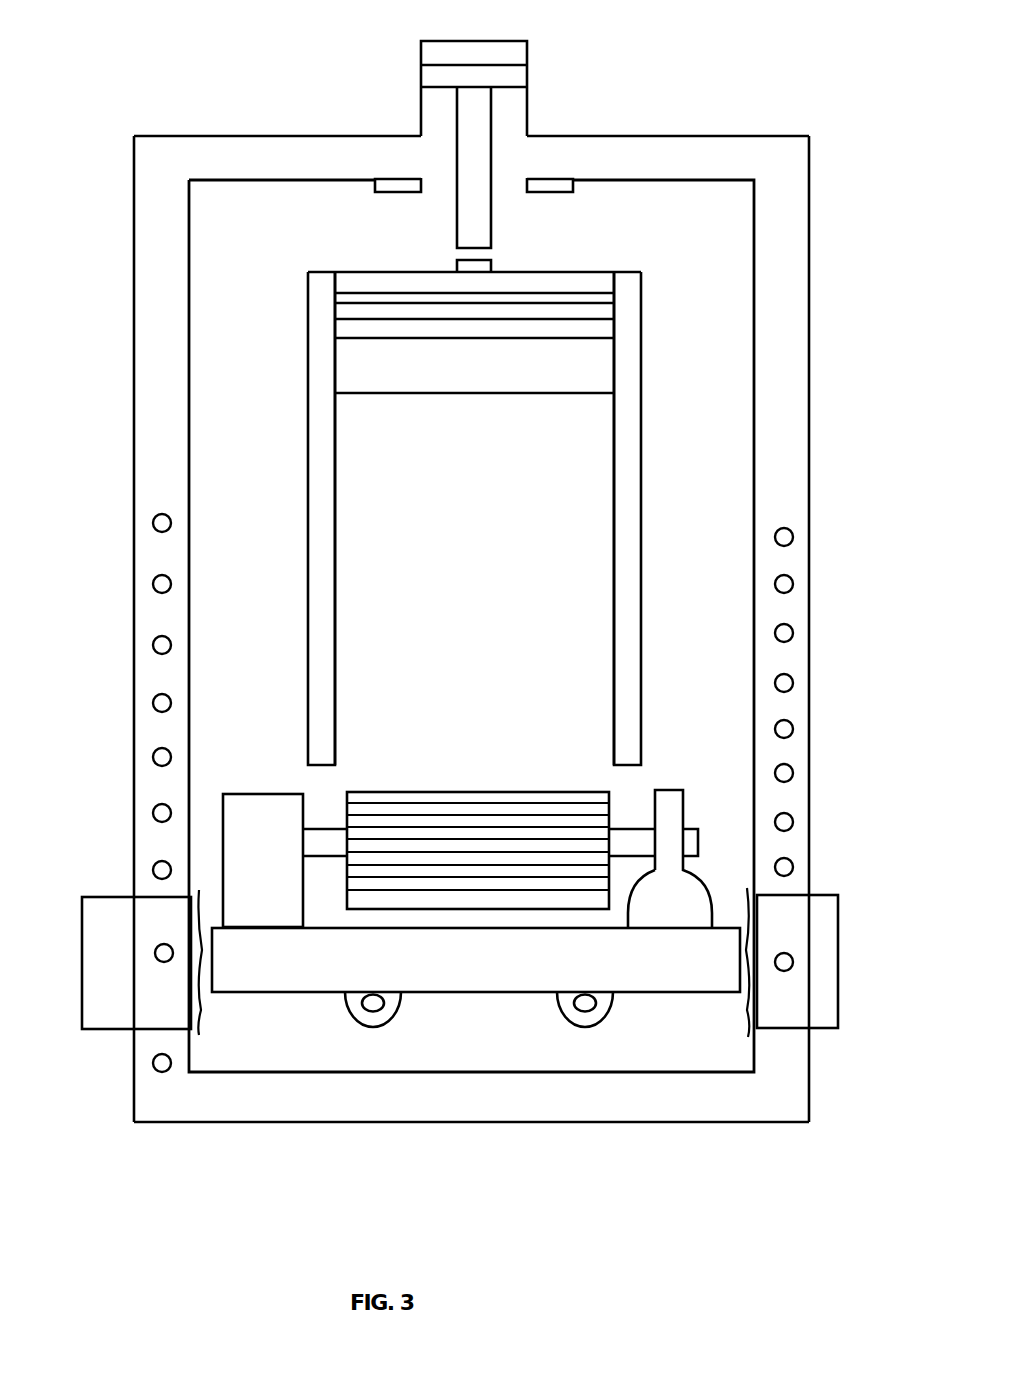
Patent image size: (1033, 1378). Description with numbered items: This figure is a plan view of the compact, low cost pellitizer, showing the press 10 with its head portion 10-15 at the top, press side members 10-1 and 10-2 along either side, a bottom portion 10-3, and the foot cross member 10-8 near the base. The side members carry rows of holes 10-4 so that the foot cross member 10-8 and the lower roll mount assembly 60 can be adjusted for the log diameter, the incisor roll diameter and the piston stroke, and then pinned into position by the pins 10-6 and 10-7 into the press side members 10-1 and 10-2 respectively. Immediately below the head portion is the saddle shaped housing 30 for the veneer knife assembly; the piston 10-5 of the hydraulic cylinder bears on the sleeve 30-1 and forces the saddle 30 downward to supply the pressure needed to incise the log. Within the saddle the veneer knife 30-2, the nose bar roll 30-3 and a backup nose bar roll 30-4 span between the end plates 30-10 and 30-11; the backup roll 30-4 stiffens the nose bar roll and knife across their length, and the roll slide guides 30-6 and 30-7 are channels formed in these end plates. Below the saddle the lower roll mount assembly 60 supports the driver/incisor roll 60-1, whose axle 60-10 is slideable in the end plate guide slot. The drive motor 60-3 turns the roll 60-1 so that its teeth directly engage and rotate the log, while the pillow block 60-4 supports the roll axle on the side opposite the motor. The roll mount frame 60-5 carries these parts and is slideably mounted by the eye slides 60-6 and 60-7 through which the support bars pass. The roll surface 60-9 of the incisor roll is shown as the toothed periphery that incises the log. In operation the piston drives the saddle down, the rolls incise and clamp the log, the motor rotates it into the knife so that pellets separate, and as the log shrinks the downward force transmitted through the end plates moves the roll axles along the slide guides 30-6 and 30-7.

The press 10 is at (581, 104).
The press side member 10-1 is at (809, 262).
The press side member 10-2 is at (134, 362).
The bottom wall 10-3 is at (347, 1122).
The head portion 10-15 is at (650, 136).
The holes 10-4 is at (156, 586).
The piston 10-5 is at (491, 232).
The pin 10-6 is at (790, 968).
The pin 10-7 is at (160, 962).
The foot cross member 10-8 is at (114, 897).
The saddle shaped housing 30 is at (268, 302).
The sleeve 30-1 is at (491, 271).
The veneer knife 30-2 is at (590, 293).
The nose bar roll 30-3 is at (603, 315).
The backup nose bar roll 30-4 is at (598, 338).
The roll slide guide 30-6 is at (614, 540).
The roll slide guide 30-7 is at (337, 565).
The end plate 30-10 is at (308, 485).
The end plate 30-11 is at (641, 508).
The lower roll mount assembly 60 is at (490, 712).
The driver/incisor roll 60-1 is at (410, 792).
The drive motor 60-3 is at (258, 794).
The pillow block 60-4 is at (672, 790).
The roll mount frame 60-5 is at (248, 992).
The eye slide 60-6 is at (396, 995).
The eye slide 60-7 is at (608, 995).
The drum grooves 60-9 is at (527, 824).
The axle 60-10 is at (338, 829).